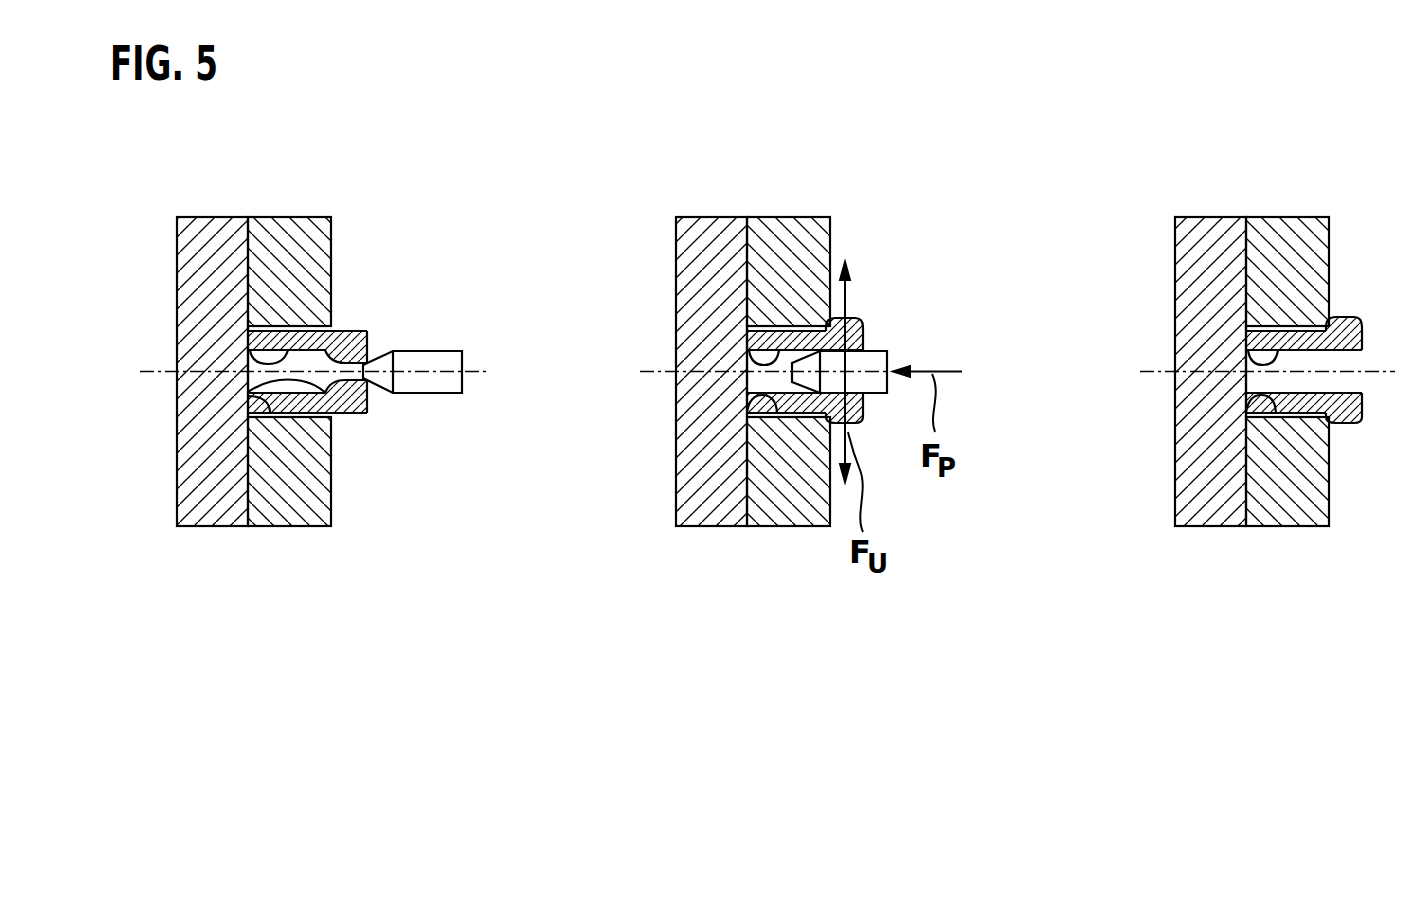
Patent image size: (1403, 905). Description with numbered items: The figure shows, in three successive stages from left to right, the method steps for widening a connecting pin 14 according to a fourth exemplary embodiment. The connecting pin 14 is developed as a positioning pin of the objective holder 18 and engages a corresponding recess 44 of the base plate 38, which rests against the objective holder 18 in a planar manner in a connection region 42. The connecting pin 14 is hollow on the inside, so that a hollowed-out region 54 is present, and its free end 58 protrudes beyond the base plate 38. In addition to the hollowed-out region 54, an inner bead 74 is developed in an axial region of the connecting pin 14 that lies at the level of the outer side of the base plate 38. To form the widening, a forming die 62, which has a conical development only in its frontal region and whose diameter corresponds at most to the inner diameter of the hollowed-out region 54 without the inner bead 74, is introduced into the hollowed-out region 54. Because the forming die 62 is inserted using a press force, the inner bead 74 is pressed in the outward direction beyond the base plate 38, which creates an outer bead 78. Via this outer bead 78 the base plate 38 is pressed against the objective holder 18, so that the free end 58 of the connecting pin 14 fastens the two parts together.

The connecting pin 14 is at (260, 341).
The objective holder 18 is at (197, 279).
The base plate 38 is at (307, 502).
The connection region 42 is at (248, 484).
The recess 44 is at (255, 383).
The hollowed-out region 54 is at (262, 363).
The free end 58 is at (368, 338).
The forming die 62 is at (433, 360).
The inner bead 74 is at (250, 396).
The outer bead 78 is at (858, 427).